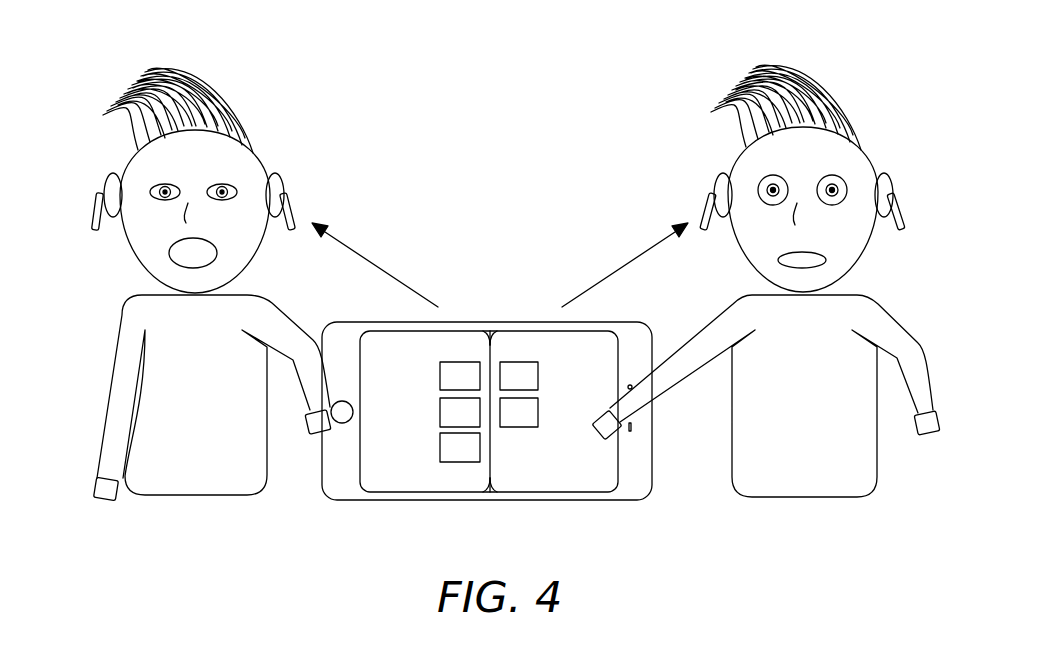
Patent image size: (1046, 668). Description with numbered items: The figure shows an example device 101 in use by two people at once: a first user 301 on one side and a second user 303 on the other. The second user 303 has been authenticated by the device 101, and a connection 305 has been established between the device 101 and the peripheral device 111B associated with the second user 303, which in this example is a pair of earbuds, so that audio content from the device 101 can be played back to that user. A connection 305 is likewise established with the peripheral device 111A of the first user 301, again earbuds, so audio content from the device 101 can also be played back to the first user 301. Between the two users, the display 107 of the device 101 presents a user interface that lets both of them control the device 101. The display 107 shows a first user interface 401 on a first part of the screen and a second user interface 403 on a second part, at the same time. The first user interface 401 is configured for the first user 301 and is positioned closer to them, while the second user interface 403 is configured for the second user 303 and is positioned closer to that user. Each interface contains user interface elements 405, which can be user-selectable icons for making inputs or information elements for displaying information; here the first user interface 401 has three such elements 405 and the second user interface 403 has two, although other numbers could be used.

The first user 301 is at (128, 146).
The second user 303 is at (877, 149).
The peripheral device 111A is at (295, 207).
The peripheral device 111B is at (700, 207).
The connection 305 is at (382, 268).
The device 101 is at (485, 322).
The first user interface 401 is at (392, 480).
The second user interface 403 is at (590, 478).
The display 107 is at (490, 490).
The user interface elements 405 is at (438, 440).